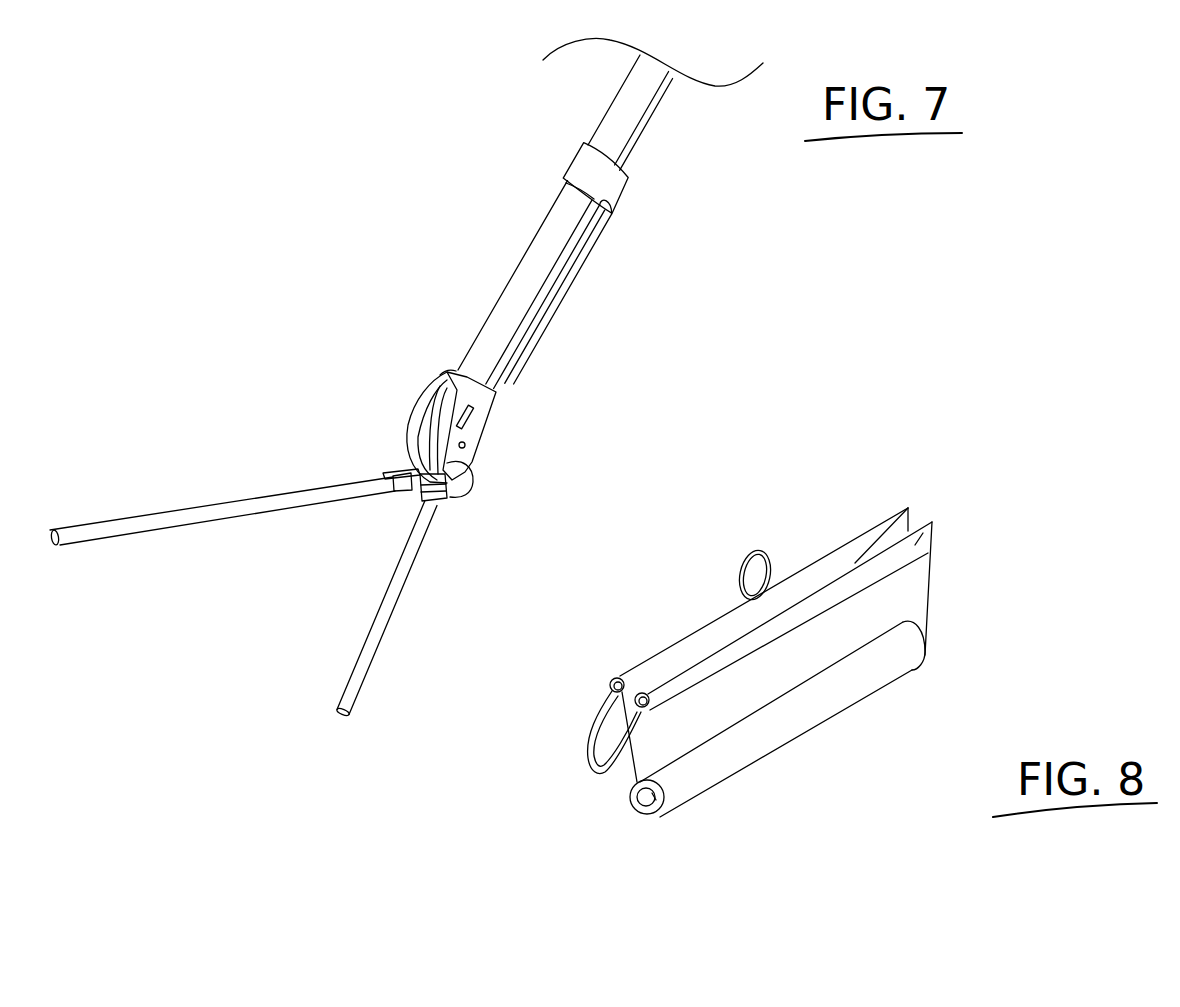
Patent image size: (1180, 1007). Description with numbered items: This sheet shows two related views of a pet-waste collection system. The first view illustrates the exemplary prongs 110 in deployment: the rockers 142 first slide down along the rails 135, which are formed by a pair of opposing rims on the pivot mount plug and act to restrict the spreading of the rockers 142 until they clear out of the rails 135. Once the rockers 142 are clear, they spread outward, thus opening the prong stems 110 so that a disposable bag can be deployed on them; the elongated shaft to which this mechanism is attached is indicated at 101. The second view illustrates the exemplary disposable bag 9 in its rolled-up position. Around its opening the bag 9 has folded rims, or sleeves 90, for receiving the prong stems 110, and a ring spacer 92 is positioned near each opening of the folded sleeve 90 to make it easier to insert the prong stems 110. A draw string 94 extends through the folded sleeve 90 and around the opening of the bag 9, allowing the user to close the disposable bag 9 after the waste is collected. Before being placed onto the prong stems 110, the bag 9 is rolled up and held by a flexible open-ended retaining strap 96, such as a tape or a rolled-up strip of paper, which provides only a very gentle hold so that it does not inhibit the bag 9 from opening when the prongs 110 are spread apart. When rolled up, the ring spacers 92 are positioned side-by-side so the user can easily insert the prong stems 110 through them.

In FIG. 8, the disposable bag 9 is at (783, 644).
In FIG. 8, the folded sleeve 90 is at (932, 521).
In FIG. 8, the ring spacer 92 is at (617, 677).
In FIG. 8, the draw string 94 is at (582, 772).
In FIG. 8, the retaining strap 96 is at (763, 548).
In FIG. 7, the pole 101 is at (533, 263).
In FIG. 7, the prongs 110 is at (135, 523).
In FIG. 7, the rails 135 is at (407, 457).
In FIG. 7, the rockers 142 is at (458, 497).